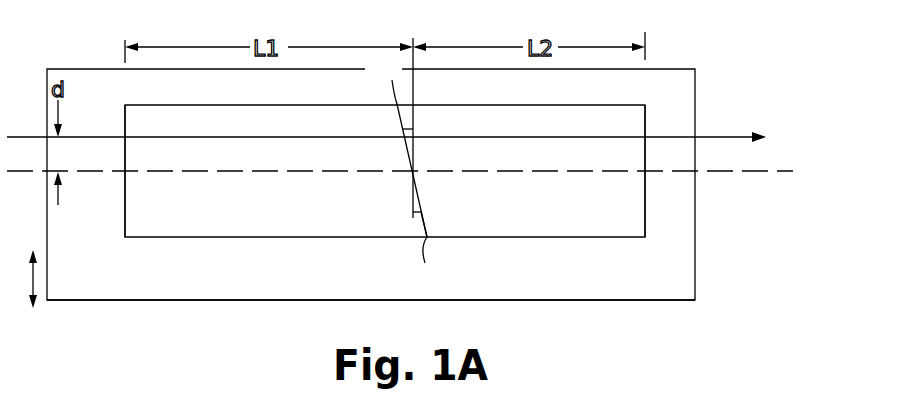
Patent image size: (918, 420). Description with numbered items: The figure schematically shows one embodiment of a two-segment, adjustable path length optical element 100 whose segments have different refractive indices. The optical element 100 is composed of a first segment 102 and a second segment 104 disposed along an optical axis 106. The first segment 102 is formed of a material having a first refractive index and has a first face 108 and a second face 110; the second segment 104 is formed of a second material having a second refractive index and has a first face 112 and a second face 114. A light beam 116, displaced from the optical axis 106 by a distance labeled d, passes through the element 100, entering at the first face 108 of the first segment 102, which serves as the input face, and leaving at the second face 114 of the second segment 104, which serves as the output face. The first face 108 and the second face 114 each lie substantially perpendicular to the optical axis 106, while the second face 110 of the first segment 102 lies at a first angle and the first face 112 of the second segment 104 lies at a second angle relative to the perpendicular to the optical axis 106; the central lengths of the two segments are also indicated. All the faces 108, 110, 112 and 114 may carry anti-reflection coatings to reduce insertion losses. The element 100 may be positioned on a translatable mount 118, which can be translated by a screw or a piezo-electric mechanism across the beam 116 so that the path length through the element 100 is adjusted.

The optical element 100 is at (714, 68).
The first segment 102 is at (172, 237).
The second segment 104 is at (555, 238).
The optical axis 106 is at (740, 172).
The first face of the first segment 108 is at (125, 222).
The second face of the first segment 110 is at (400, 121).
The first face of the second segment 112 is at (428, 221).
The second face of the second segment 114 is at (645, 220).
The light beam 116 is at (720, 136).
The translatable mount 118 is at (72, 300).